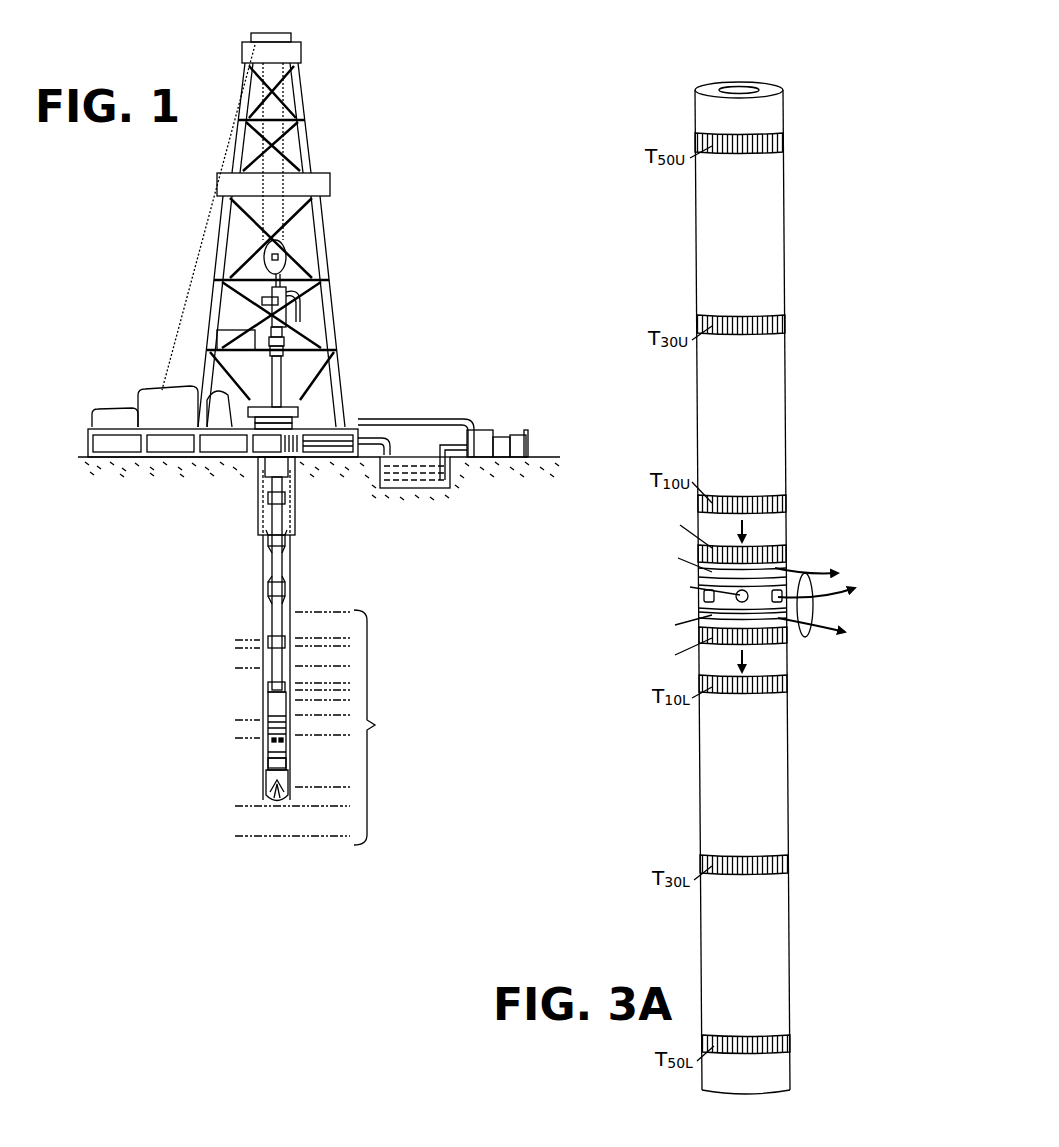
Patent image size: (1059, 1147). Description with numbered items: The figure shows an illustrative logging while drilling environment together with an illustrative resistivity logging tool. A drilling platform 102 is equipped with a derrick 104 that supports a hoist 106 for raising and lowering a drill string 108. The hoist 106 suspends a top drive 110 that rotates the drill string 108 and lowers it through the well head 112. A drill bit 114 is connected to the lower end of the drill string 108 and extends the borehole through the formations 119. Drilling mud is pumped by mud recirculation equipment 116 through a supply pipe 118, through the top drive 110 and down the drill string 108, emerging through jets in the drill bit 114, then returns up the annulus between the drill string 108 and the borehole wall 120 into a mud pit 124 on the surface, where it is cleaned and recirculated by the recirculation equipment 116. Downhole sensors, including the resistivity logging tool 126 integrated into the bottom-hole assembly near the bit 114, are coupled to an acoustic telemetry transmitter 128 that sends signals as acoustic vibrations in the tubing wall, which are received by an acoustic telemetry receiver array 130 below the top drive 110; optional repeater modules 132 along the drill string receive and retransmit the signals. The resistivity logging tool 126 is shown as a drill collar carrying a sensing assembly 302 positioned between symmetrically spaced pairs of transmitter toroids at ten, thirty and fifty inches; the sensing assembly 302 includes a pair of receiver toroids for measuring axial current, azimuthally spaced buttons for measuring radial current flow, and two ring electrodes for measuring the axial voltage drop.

In FIG. 1, the drilling platform 102 is at (88, 436).
In FIG. 1, the derrick 104 is at (313, 128).
In FIG. 1, the hoist 106 is at (284, 258).
In FIG. 1, the drill string 108 is at (281, 570).
In FIG. 1, the top drive 110 is at (285, 320).
In FIG. 1, the well head 112 is at (293, 411).
In FIG. 1, the drill bit 114 is at (285, 792).
In FIG. 1, the mud recirculation equipment 116 is at (483, 432).
In FIG. 1, the supply pipe 118 is at (410, 418).
In FIG. 1, the formations 119 is at (327, 727).
In FIG. 1, the borehole wall 120 is at (291, 578).
In FIG. 1, the mud pit 124 is at (397, 470).
In FIG. 1, the resistivity logging tool 126 is at (270, 762).
In FIG. 3A, the resistivity logging tool 126 is at (700, 108).
In FIG. 1, the acoustic telemetry transmitter 128 is at (272, 697).
In FIG. 1, the acoustic telemetry receiver array 130 is at (279, 372).
In FIG. 1, the repeater modules 132 is at (268, 594).
In FIG. 3A, the sensing assembly 302 is at (640, 512).